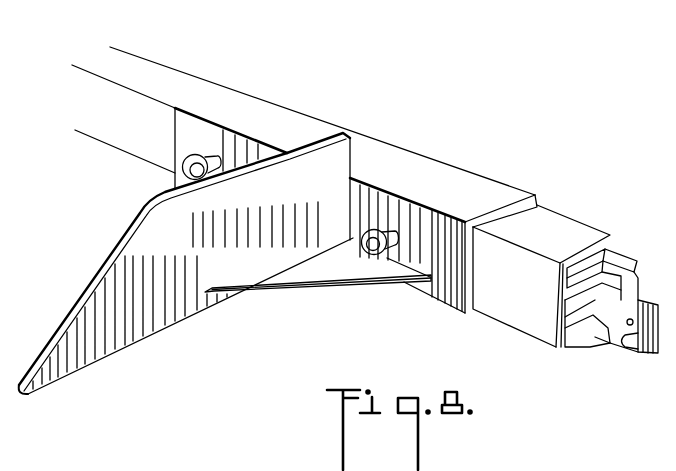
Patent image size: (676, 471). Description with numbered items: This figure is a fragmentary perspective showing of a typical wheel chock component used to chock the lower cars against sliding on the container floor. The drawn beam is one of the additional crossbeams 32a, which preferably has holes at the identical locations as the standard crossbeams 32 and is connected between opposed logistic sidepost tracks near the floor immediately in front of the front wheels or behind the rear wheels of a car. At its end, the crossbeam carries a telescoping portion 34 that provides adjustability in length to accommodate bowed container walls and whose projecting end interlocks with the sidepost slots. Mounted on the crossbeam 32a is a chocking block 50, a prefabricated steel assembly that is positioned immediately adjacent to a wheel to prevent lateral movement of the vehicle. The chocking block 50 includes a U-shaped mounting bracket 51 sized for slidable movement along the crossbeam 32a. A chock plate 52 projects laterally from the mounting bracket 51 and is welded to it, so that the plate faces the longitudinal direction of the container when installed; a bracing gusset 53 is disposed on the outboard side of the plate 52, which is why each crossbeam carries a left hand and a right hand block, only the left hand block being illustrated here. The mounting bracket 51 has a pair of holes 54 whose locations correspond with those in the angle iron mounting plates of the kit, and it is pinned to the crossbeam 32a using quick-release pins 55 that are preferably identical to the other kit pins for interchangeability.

The crossbeam 32 is at (197, 88).
The crossbeam 32a is at (575, 228).
The telescoping portion 34 is at (625, 262).
The chocking block 50 is at (192, 330).
The mounting bracket 51 is at (473, 178).
The chock plate 52 is at (100, 368).
The bracing gusset 53 is at (408, 284).
The holes 54 is at (212, 161).
The quick-release pins 55 is at (175, 172).